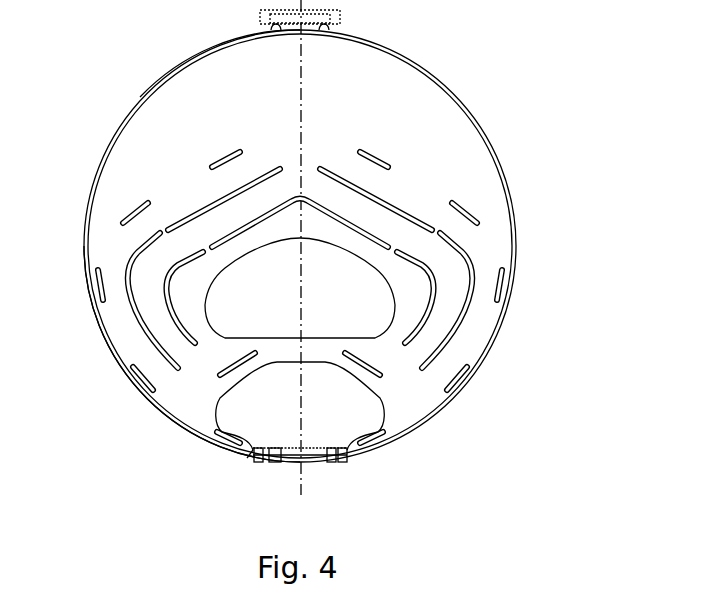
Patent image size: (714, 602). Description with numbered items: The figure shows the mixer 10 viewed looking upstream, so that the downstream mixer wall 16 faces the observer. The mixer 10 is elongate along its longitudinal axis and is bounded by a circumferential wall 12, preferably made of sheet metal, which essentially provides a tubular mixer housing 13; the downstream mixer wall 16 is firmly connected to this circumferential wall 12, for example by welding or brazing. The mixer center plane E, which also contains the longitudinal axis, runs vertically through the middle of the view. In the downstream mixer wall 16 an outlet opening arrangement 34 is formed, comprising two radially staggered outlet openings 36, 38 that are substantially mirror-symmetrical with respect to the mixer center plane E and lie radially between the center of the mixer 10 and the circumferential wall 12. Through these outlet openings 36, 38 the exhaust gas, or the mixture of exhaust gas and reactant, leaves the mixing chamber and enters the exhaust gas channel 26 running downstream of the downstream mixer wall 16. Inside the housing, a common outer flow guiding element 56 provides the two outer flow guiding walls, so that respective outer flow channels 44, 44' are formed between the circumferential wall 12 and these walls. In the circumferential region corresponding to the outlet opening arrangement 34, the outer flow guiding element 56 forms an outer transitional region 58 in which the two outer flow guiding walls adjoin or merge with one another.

The mixer 10 is at (590, 70).
The circumferential wall 12 is at (507, 173).
The tubular mixer housing 13 is at (85, 293).
The downstream mixer wall 16 is at (435, 103).
The exhaust gas channel 26 is at (160, 128).
The outlet opening arrangement 34 is at (398, 396).
The outlet opening 36 is at (368, 312).
The outlet opening 38 is at (360, 413).
The outer flow channel 44 is at (360, 497).
The outer flow channel 44' is at (160, 468).
The outer flow guiding element 56 is at (330, 452).
The outer transitional region 58 is at (267, 452).
The mixer center plane E is at (301, 61).